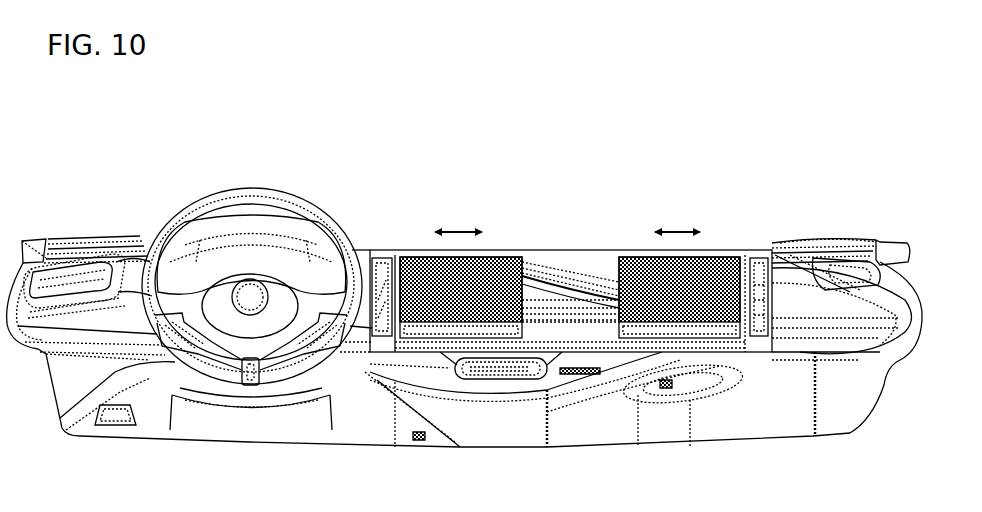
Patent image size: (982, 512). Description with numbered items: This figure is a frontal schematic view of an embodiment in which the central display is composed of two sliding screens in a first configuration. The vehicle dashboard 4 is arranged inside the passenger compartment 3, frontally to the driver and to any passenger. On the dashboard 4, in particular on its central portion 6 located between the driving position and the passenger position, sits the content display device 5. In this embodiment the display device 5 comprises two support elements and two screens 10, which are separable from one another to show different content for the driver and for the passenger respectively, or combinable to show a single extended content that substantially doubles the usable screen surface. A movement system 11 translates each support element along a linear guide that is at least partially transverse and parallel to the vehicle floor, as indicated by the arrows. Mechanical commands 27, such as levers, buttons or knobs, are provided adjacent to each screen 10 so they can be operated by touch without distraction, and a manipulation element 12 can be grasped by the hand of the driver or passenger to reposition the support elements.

The passenger compartment 3 is at (558, 250).
The vehicle dashboard 4 is at (878, 237).
The content display device 5 is at (570, 312).
The central portion 6 is at (465, 250).
The screen 10 is at (457, 305).
The movement system 11 is at (405, 250).
The manipulation element 12 is at (407, 365).
The mechanical commands 27 is at (488, 333).